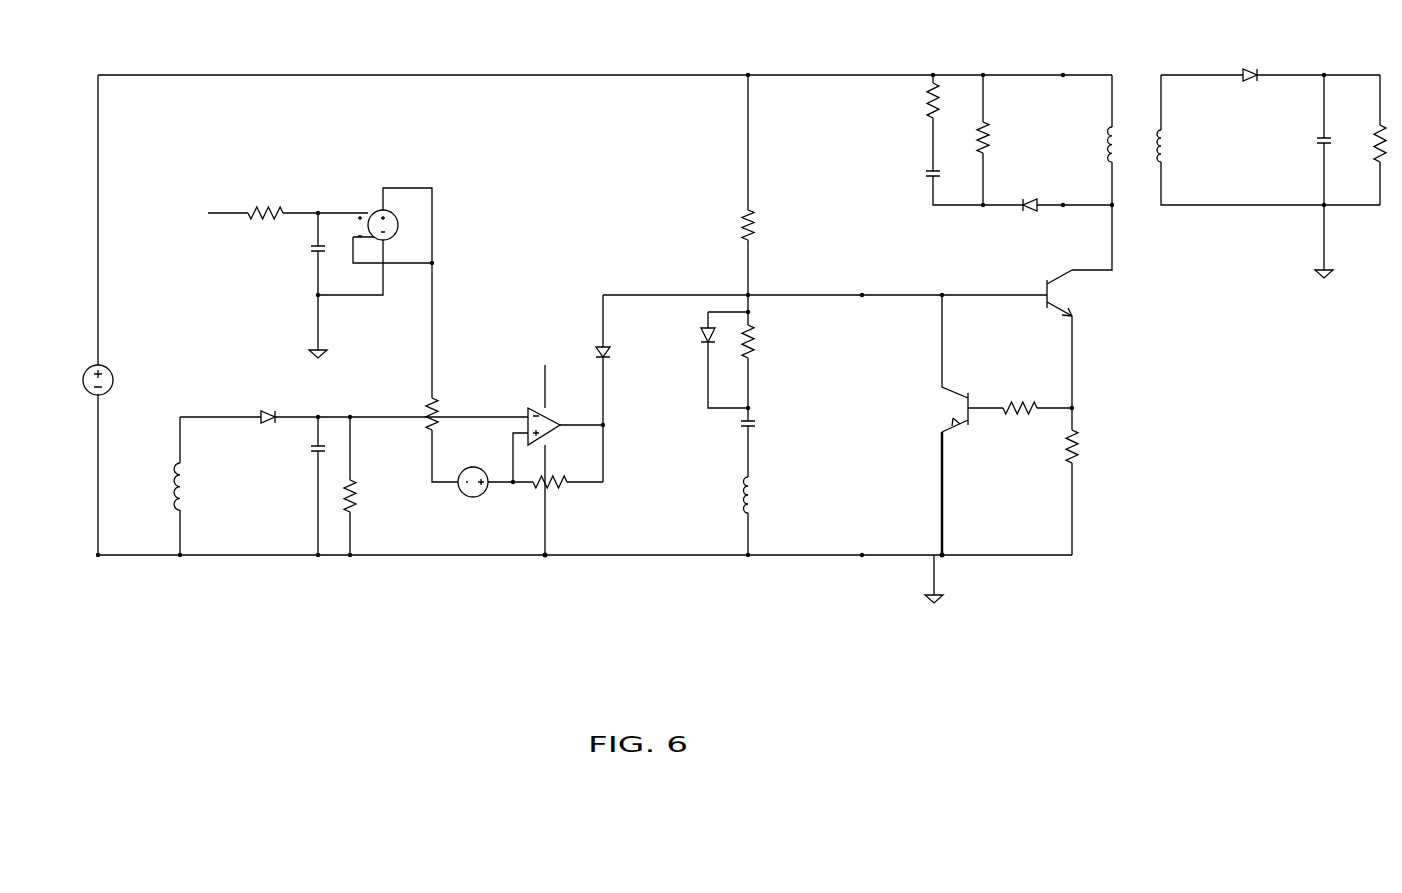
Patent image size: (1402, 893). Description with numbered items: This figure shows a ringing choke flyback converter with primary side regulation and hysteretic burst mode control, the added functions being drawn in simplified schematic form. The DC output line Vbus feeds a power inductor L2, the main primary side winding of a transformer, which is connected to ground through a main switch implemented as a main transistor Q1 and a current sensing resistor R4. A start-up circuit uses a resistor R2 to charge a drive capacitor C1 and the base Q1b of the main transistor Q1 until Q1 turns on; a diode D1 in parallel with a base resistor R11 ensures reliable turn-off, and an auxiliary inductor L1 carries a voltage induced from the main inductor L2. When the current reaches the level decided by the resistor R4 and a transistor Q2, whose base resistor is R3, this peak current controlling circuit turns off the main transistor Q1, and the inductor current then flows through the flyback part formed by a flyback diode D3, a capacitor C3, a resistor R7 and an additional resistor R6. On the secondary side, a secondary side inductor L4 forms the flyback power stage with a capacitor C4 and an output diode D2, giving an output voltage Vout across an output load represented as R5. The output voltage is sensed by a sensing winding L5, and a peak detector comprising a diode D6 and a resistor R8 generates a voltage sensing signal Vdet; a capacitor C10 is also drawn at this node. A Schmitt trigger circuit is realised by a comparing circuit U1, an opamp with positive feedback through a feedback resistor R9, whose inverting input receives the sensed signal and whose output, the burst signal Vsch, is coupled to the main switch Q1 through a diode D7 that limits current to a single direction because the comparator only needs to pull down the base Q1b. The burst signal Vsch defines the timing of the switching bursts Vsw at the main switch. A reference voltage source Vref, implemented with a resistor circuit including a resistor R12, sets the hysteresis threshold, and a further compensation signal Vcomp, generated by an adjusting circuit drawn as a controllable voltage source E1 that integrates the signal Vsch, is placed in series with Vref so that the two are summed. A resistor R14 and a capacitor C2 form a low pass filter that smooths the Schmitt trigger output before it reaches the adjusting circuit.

The DC output line Vbus is at (122, 392).
The Schmitt trigger output signal Vsch is at (400, 307).
The resistor R14 is at (307, 194).
The capacitor C2 is at (297, 254).
The controllable voltage source E1 is at (375, 290).
The compensation signal Vcomp is at (481, 262).
The sensing winding L5 is at (158, 486).
The diode D6 is at (273, 403).
The voltage sensing signal Vdet is at (359, 402).
The capacitor C10 is at (296, 486).
The resistor R8 is at (365, 486).
The resistor R12 is at (456, 405).
The reference voltage source Vref is at (478, 493).
The comparing circuit U1 is at (551, 386).
The feedback resistor R9 is at (569, 498).
The diode D7 is at (621, 341).
The diode D1 is at (705, 360).
The base resistor R11 is at (772, 358).
The drive capacitor C1 is at (732, 449).
The auxiliary inductor L1 is at (725, 516).
The resistor R2 is at (731, 185).
The additional resistor R6 is at (917, 123).
The capacitor C3 is at (959, 177).
The resistor R7 is at (1001, 140).
The flyback diode D3 is at (1062, 222).
The power inductor L2 is at (1091, 172).
The switching bursts Vsw is at (1139, 237).
The main transistor Q1 is at (1080, 339).
The base of the main transistor Q1b is at (1040, 290).
The transistor Q2 is at (936, 425).
The base resistor R3 is at (1020, 390).
The current sensing resistor R4 is at (1093, 481).
The secondary side inductor L4 is at (1268, 140).
The output diode D2 is at (1307, 93).
The output voltage Vout is at (1325, 54).
The capacitor C4 is at (1308, 140).
The output load R5 is at (1363, 140).